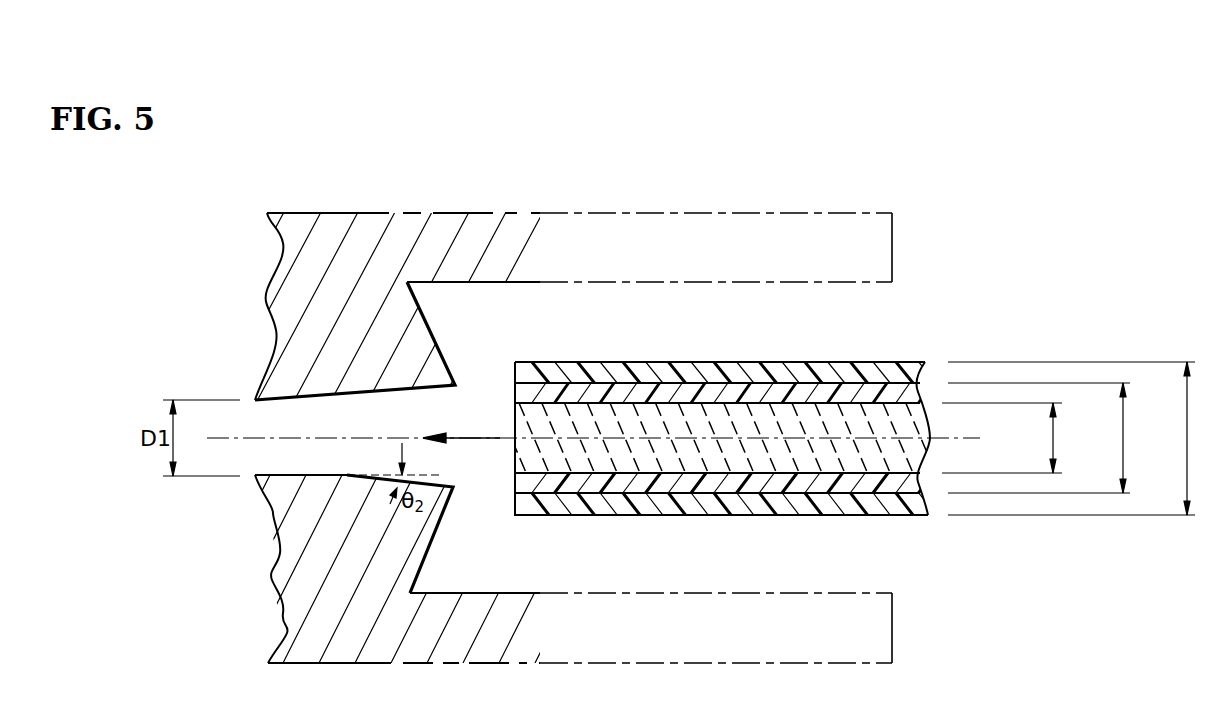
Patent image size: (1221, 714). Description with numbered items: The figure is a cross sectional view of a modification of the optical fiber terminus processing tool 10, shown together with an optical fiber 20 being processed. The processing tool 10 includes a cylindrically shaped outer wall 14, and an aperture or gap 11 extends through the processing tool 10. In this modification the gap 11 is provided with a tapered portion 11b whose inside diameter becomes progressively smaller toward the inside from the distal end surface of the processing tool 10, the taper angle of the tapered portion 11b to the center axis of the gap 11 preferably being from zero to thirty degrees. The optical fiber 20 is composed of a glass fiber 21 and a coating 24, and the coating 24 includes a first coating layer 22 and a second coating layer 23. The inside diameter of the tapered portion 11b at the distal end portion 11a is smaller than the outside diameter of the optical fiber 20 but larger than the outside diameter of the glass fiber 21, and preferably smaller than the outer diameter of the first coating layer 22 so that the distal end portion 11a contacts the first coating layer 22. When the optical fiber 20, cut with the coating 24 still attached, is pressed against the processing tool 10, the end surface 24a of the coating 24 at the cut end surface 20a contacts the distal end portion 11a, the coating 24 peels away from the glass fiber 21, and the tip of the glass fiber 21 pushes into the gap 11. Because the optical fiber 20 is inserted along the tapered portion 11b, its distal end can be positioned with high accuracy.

The optical fiber terminus processing tool 10 is at (382, 145).
The gap 11 is at (468, 412).
The distal end portion 11a is at (475, 478).
The tapered portion 11b is at (405, 392).
The outer wall 14 is at (850, 228).
The optical fiber 20 is at (1087, 233).
The cut end surface 20a is at (510, 412).
The glass fiber 21 is at (913, 432).
The first coating layer 22 is at (913, 393).
The second coating layer 23 is at (890, 365).
The coating 24 is at (1023, 222).
The end surface of the coating 24a is at (508, 498).